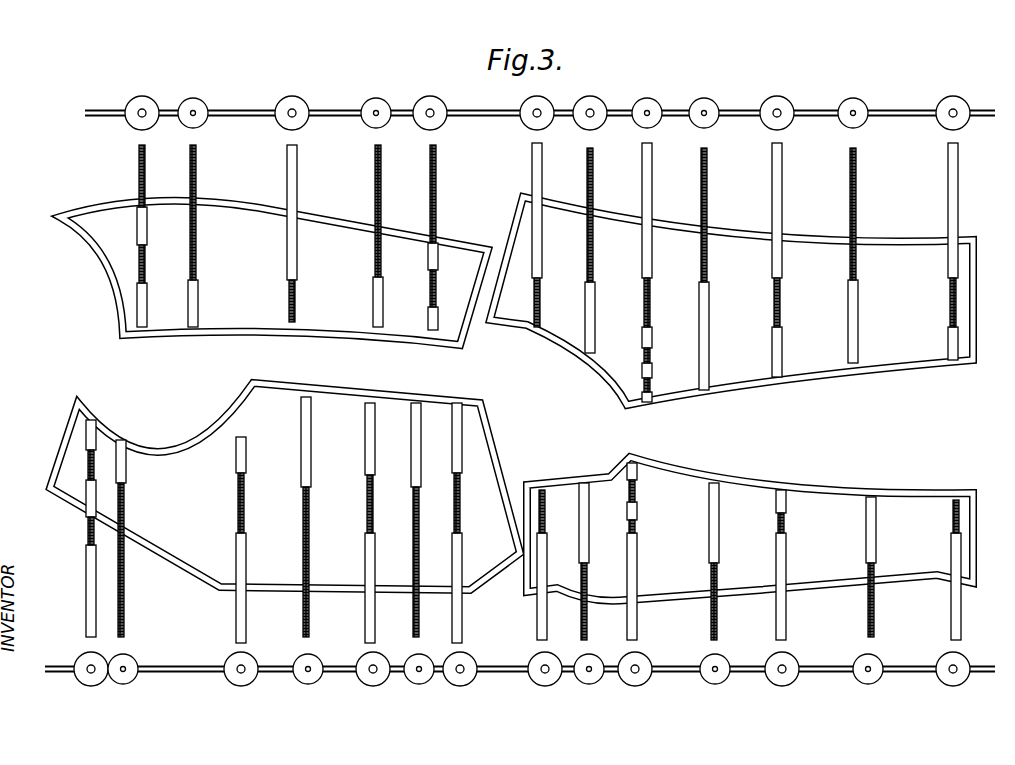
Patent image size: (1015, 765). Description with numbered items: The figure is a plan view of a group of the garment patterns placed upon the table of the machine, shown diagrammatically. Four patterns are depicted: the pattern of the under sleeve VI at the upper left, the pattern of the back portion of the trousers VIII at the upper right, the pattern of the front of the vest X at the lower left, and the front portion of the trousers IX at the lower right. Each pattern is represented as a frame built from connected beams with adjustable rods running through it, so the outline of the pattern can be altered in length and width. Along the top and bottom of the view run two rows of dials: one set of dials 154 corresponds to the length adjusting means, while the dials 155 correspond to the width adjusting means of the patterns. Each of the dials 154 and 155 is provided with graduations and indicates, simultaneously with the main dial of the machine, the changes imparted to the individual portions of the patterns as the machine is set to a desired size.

The dials 154 is at (430, 100).
The dials 155 is at (367, 122).
The pattern of the under sleeve VI is at (250, 270).
The pattern of the back portion of the trousers VIII is at (750, 304).
The pattern of the front of the vest X is at (182, 512).
The front portion of the trousers IX is at (678, 546).